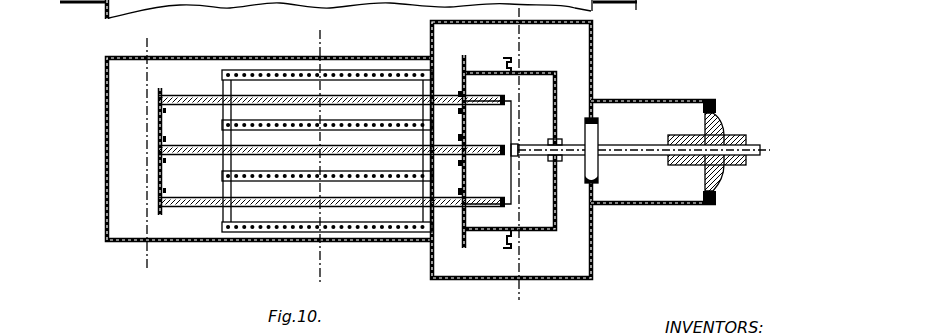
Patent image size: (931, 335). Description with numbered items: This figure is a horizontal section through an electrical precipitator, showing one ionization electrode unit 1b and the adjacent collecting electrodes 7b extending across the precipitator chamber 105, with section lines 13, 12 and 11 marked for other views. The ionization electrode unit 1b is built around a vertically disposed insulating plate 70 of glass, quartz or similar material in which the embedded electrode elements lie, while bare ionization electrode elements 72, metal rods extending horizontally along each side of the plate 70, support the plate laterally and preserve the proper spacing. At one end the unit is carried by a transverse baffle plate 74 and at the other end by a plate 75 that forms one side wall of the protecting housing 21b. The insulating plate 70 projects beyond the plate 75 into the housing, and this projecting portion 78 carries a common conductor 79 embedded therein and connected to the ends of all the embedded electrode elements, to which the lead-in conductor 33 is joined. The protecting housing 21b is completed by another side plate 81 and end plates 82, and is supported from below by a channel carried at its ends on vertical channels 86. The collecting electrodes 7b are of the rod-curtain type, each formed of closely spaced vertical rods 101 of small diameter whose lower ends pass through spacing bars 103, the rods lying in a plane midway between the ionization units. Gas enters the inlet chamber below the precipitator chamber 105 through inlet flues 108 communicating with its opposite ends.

The inlet flue 108 is at (82, 3).
The section line 13- 13 is at (168, 43).
The section line 12- 12 is at (308, 42).
The section line 11- 11 is at (512, 15).
The transverse baffle plate 74 is at (157, 128).
The plate 75 is at (467, 193).
The insulating plate 70 is at (197, 96).
The bare ionization electrode element 72 is at (180, 95).
The vertical rod 101 is at (274, 71).
The precipitator chamber 105 is at (267, 216).
The spacing bar 103 is at (277, 175).
The ionization electrode unit 1b is at (181, 158).
The collecting electrode 7b is at (260, 184).
The protecting housing 21b is at (562, 94).
The end plate 82 is at (541, 73).
The vertical channel 86 is at (503, 58).
The common conductor 79 is at (497, 98).
The side plate 81 is at (557, 118).
The shaft 33 is at (513, 118).
The projecting portion 78 is at (481, 146).